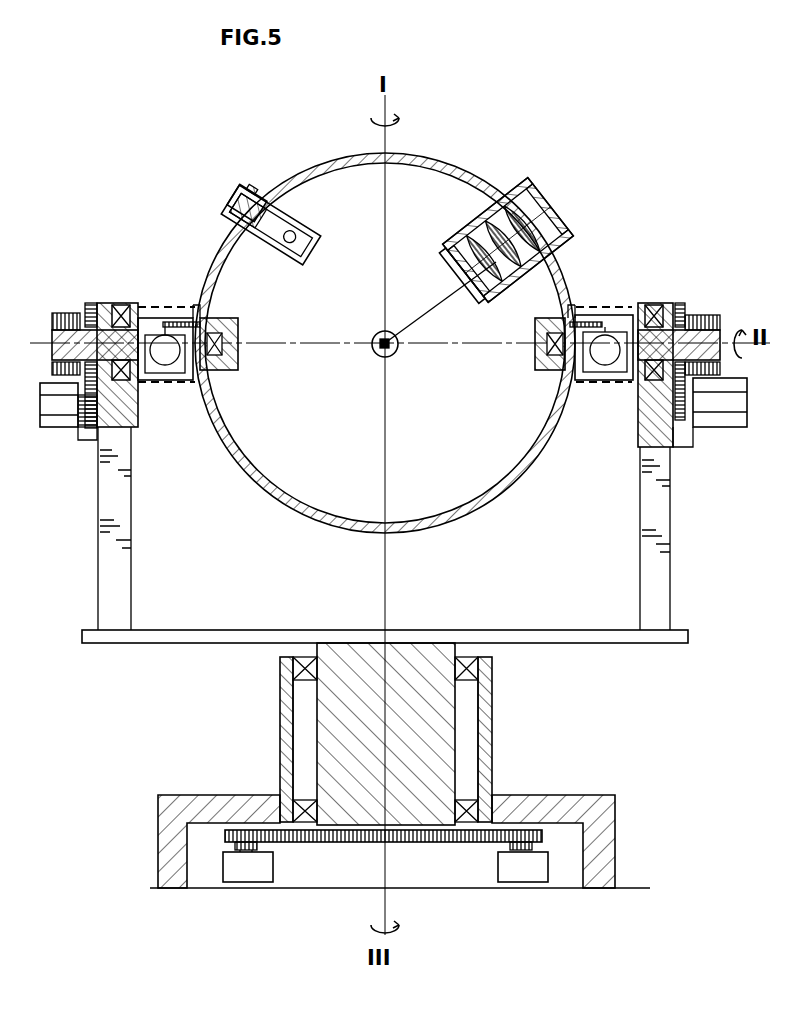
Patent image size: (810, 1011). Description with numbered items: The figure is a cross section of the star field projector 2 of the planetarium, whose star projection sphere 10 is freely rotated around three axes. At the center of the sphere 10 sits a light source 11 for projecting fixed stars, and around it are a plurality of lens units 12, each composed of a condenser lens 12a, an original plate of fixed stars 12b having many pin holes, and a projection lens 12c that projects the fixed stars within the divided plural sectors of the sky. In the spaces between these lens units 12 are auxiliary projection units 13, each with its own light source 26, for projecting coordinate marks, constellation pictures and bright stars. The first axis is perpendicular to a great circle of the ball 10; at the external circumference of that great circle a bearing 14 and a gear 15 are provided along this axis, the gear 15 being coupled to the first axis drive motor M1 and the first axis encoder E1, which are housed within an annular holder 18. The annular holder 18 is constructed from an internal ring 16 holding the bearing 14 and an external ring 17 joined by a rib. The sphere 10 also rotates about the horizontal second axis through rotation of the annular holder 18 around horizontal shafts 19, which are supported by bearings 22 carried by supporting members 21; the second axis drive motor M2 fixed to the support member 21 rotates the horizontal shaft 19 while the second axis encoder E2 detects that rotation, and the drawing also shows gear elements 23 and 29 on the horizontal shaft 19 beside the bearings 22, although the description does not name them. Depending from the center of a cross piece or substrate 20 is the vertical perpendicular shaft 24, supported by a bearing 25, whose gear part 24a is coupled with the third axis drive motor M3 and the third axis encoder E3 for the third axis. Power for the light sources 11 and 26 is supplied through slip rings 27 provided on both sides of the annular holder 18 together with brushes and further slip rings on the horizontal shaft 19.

The star field projector 2 is at (153, 152).
The star projection sphere 10 is at (413, 152).
The light source 11 is at (394, 352).
The lens unit 12 is at (541, 185).
The condenser lens 12a is at (462, 258).
The original plate of fixed stars 12b is at (499, 190).
The projection lens 12c is at (560, 215).
The auxiliary projection unit 13 is at (249, 185).
The bearing 14 is at (240, 332).
The gear 15 is at (197, 303).
The internal ring 16 is at (210, 385).
The external ring 17 is at (136, 392).
The annular holder 18 is at (140, 283).
The horizontal shaft 19 is at (56, 346).
The cross piece or substrate 20 is at (538, 632).
The supporting member 21 is at (127, 556).
The bearing 22 is at (120, 305).
The pinion gear 23 is at (90, 303).
The perpendicular shaft 24 is at (443, 732).
The gear part 24a is at (340, 843).
The bearing 25 is at (305, 812).
The light source 26 is at (300, 242).
The slip ring 27 is at (150, 307).
The worm gear 29 is at (62, 313).
The first axis encoder E1 is at (168, 366).
The second axis encoder E2 is at (55, 432).
The third axis encoder E3 is at (235, 872).
The first axis drive motor M1 is at (606, 368).
The second axis drive motor M2 is at (716, 430).
The third axis drive motor M3 is at (527, 872).